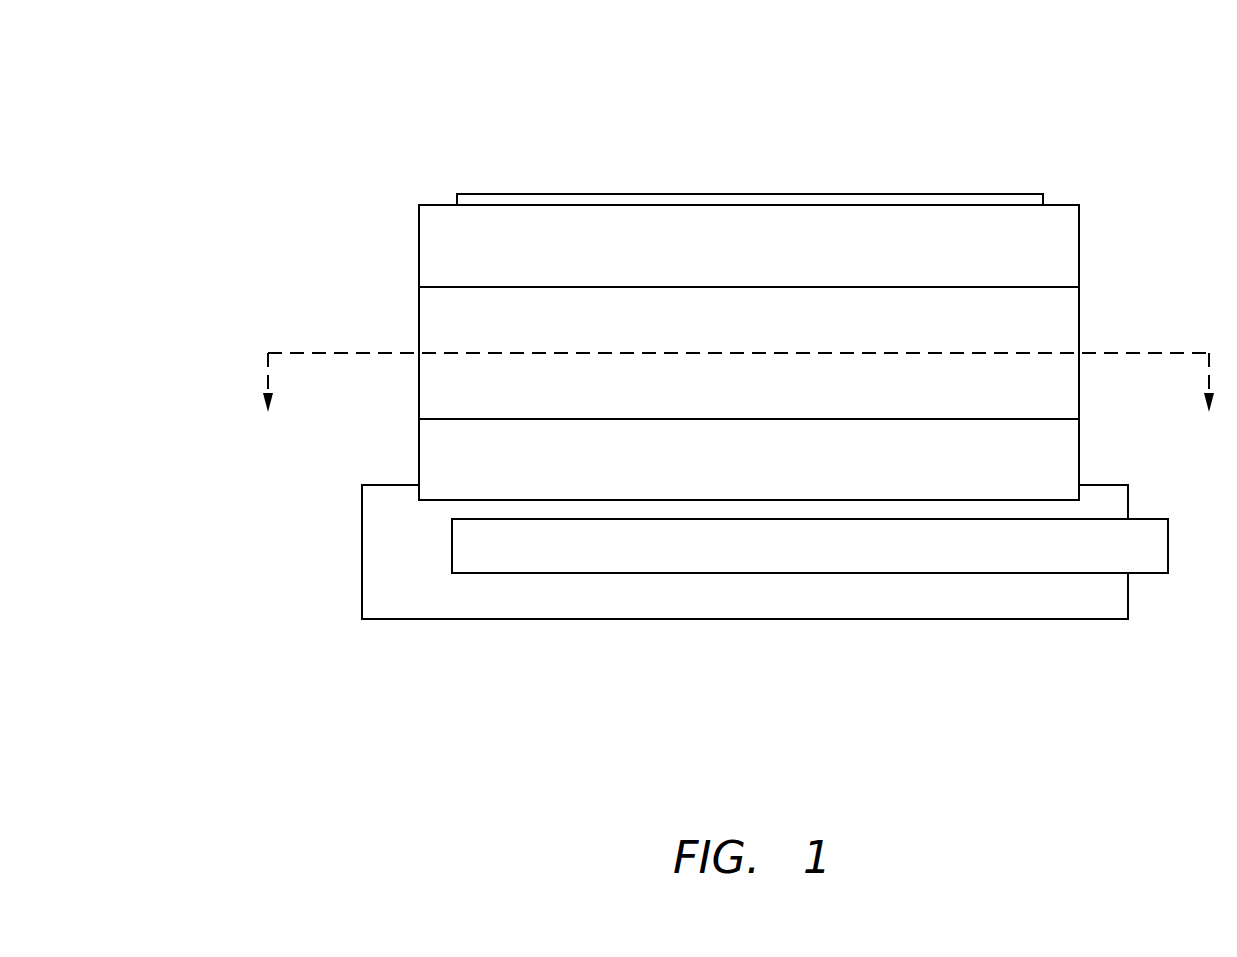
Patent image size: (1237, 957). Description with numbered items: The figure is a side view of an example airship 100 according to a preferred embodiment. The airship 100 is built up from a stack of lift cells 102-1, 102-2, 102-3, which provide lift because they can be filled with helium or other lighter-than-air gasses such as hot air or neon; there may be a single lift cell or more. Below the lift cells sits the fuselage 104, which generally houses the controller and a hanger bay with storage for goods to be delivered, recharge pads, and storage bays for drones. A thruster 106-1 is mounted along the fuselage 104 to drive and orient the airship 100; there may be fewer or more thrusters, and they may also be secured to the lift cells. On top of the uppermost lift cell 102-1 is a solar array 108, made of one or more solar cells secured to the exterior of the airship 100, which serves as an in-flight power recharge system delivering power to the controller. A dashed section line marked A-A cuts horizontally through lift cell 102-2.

The airship 100 is at (307, 125).
The lift cell 102-1 is at (749, 246).
The lift cell 102-2 is at (749, 353).
The lift cell 102-3 is at (749, 459).
The fuselage 104 is at (577, 620).
The thruster 106-1 is at (810, 546).
The solar array 108 is at (863, 172).